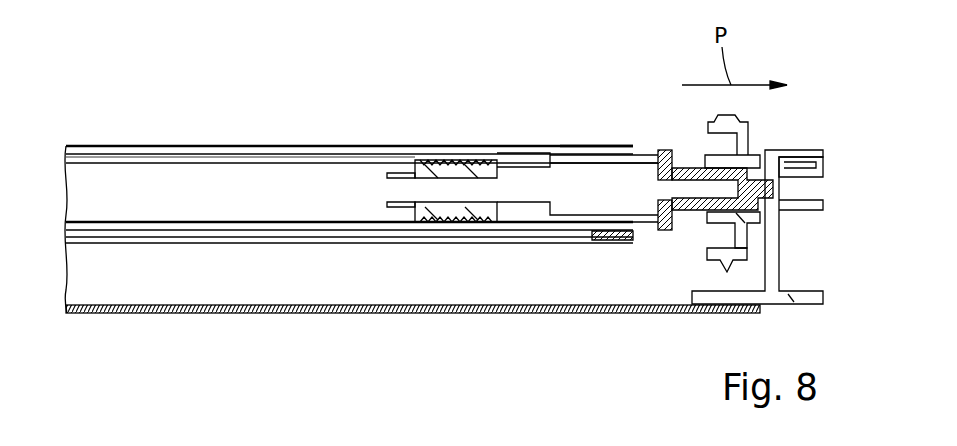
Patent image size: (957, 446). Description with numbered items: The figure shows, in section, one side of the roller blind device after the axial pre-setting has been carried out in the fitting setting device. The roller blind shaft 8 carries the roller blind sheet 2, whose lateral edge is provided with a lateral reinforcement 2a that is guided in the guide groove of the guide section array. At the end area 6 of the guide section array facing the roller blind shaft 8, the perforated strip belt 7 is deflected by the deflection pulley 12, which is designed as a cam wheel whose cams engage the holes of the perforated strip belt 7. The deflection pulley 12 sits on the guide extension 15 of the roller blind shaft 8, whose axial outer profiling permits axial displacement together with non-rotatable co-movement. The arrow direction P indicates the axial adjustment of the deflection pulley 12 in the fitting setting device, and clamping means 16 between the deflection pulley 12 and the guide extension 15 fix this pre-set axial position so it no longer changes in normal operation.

The roller blind sheet 2 is at (293, 146).
The lateral reinforcement 2a is at (586, 142).
The roller blind shaft 8 is at (335, 163).
The guide extension 15 is at (673, 179).
The clamping means 16 is at (708, 169).
The deflection pulley 12 is at (746, 138).
The perforated strip belt 7 is at (717, 260).
The end area 6 is at (818, 262).